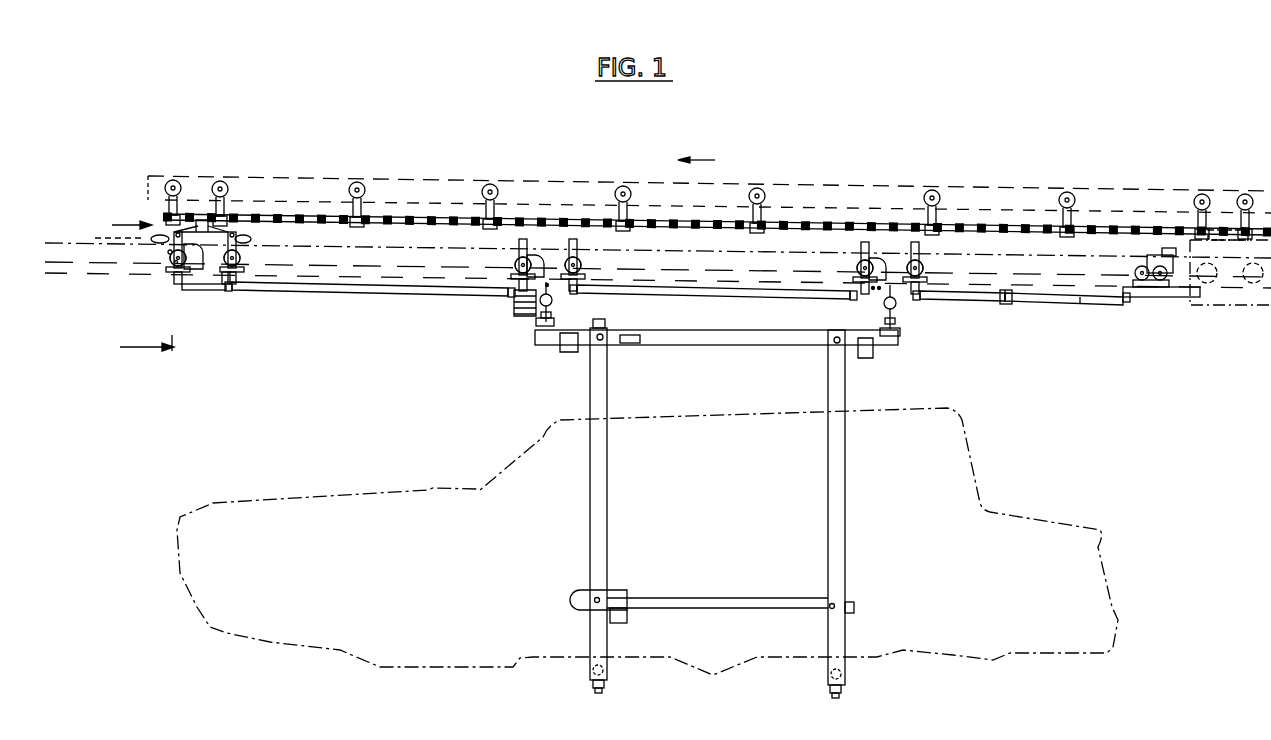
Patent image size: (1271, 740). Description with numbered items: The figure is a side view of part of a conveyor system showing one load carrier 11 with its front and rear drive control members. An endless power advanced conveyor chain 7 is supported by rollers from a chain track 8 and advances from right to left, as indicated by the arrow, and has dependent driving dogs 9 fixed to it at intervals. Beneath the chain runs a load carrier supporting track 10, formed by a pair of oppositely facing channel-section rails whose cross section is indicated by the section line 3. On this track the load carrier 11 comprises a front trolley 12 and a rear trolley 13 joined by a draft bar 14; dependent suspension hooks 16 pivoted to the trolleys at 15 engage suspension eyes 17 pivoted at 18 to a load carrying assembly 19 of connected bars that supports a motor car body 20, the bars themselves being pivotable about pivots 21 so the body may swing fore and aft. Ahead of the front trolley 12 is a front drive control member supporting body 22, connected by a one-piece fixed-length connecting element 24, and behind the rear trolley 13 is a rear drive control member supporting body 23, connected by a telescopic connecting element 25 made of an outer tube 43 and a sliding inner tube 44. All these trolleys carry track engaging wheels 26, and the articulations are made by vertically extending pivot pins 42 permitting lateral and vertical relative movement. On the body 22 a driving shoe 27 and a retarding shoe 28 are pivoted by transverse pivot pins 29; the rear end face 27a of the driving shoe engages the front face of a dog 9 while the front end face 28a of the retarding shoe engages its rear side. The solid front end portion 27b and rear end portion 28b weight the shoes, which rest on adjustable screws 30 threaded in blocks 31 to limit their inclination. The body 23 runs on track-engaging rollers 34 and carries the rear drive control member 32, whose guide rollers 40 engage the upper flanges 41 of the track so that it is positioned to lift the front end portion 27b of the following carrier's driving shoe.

The section line 3 is at (133, 286).
The conveyor chain 7 is at (408, 220).
The chain track 8 is at (522, 182).
The driving dog 9 is at (201, 255).
The load carrier supporting track 10 is at (600, 252).
The load carrier 11 is at (575, 250).
The front trolley 12 is at (516, 290).
The rear trolley 13 is at (940, 296).
The draft bar 14 is at (722, 290).
The suspension pivot 15 is at (546, 292).
The suspension hook 16 is at (548, 318).
The suspension eye 17 is at (556, 303).
The suspension pivot 18 is at (543, 333).
The load carrying assembly 19 is at (598, 440).
The motor car body 20 is at (444, 512).
The pivot 21 is at (568, 600).
The front drive control member supporting body 22 is at (222, 280).
The rear drive control member supporting body 23 is at (1160, 282).
The connecting element 24 is at (355, 290).
The connecting element 25 is at (1014, 304).
The track engaging wheels 26 is at (176, 272).
The driving shoe 27 is at (175, 232).
The rear end face 27a is at (198, 225).
The front end portion 27b is at (151, 238).
The retarding shoe 28 is at (240, 236).
The front end face 28a is at (205, 222).
The rear end portion 28b is at (251, 238).
The transverse pivot pin 29 is at (170, 233).
The adjustable screw 30 is at (168, 255).
The block 31 is at (175, 262).
The rear drive control member 32 is at (1158, 253).
The track-engaging roller 34 is at (1141, 282).
The guide roller 40 is at (1185, 290).
The upper flange 41 is at (1072, 262).
The pivot pin 42 is at (245, 288).
The outer tube 43 is at (952, 300).
The inner tube 44 is at (1087, 303).